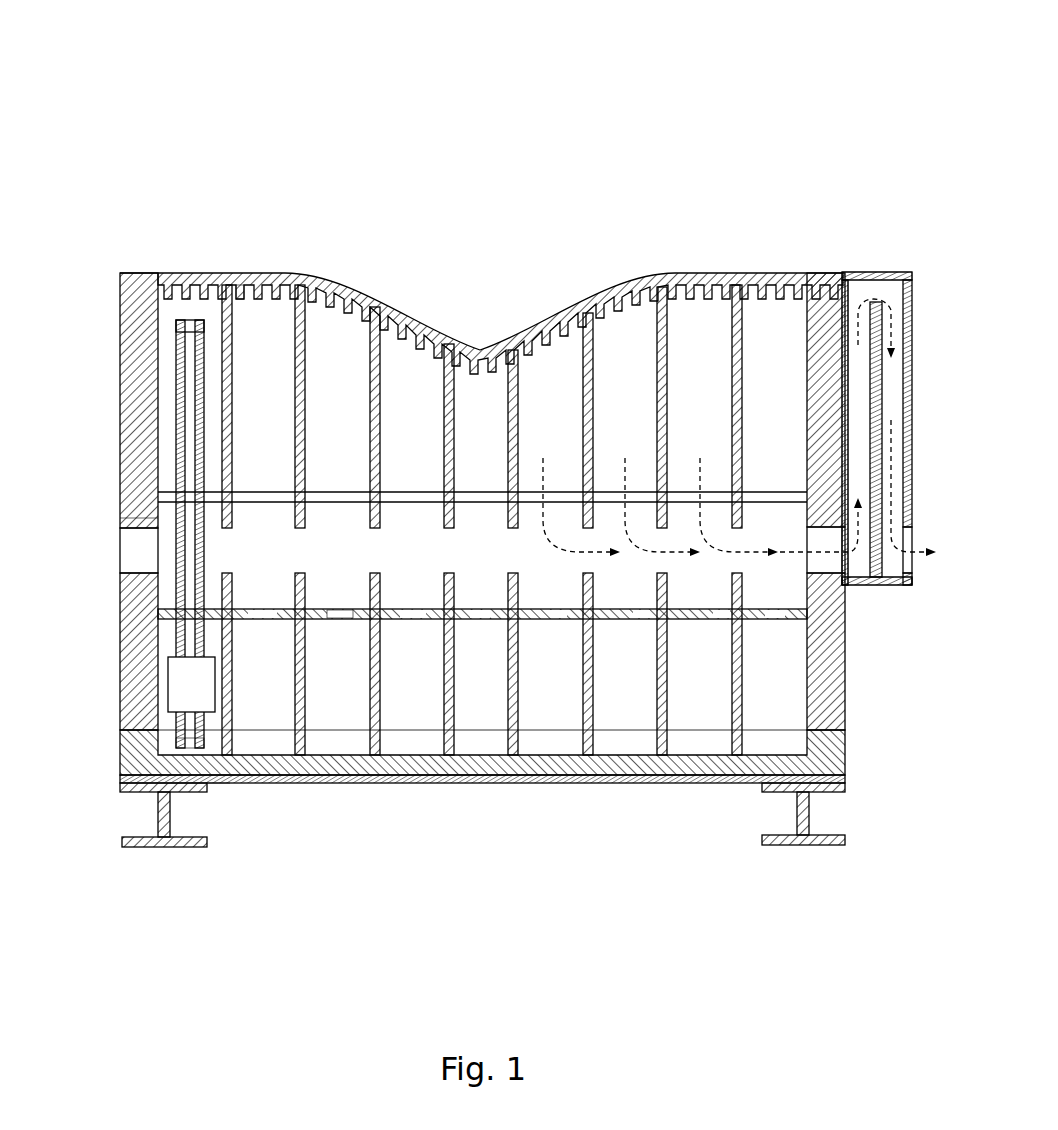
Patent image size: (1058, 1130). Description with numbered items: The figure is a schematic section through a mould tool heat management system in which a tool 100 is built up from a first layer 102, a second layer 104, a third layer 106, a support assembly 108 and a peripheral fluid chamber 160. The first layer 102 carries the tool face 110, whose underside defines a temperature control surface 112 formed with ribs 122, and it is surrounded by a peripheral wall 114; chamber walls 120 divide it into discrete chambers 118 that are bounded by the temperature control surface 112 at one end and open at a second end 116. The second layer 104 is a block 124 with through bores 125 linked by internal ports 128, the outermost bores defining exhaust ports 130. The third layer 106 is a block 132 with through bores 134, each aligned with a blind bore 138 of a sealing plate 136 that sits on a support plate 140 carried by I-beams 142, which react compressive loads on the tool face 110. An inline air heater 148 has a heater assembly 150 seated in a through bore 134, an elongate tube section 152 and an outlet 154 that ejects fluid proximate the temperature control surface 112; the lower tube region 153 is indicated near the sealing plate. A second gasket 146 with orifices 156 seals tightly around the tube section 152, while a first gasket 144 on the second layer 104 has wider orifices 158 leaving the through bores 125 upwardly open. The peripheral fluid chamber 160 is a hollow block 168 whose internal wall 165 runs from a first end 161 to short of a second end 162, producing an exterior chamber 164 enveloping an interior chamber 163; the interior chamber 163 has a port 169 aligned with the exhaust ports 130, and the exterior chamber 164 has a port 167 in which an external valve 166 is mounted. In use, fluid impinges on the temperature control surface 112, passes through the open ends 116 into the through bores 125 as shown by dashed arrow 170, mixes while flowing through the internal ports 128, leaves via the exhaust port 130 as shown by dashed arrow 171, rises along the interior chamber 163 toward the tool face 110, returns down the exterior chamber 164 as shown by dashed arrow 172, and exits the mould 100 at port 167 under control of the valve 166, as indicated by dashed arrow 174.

The tool 100 is at (592, 116).
The first layer 102 is at (112, 352).
The second layer 104 is at (114, 557).
The third layer 106 is at (114, 677).
The support assembly 108 is at (107, 730).
The tool face 110 is at (380, 303).
The temperature control surface 112 is at (400, 357).
The peripheral wall 114 is at (120, 301).
The open end 116 is at (253, 492).
The chambers 118 is at (248, 419).
The chamber walls 120 is at (306, 402).
The ribs 122 is at (245, 302).
The block 124 is at (128, 518).
The through bores 125 is at (248, 561).
The internal ports 128 is at (305, 540).
The exhaust ports 130 is at (810, 573).
The block 132 is at (845, 700).
The through bores 134 is at (251, 686).
The sealing plate 136 is at (845, 740).
The blind bores 138 is at (248, 754).
The support plate 140 is at (845, 775).
The I-beams 142 is at (810, 815).
The first gasket 144 is at (120, 497).
The second gasket 146 is at (120, 615).
The inline air heater 148 is at (217, 788).
The heater assembly 150 is at (191, 684).
The tube section 152 is at (176, 438).
The tube end 153 is at (190, 748).
The outlet 154 is at (190, 320).
The orifices 156 is at (350, 622).
The orifices 158 is at (235, 505).
The peripheral fluid chamber 160 is at (878, 218).
The first end 161 is at (882, 585).
The second end 162 is at (850, 276).
The interior chamber 163 is at (845, 416).
The exterior chamber 164 is at (880, 416).
The internal wall 165 is at (873, 300).
The external valve 166 is at (910, 526).
The port 167 is at (908, 580).
The hollow block 168 is at (842, 275).
The port 169 is at (849, 556).
The dashed arrow 170 is at (660, 495).
The dashed arrow 171 is at (800, 552).
The dashed arrow 172 is at (883, 300).
The dashed arrow 174 is at (895, 500).